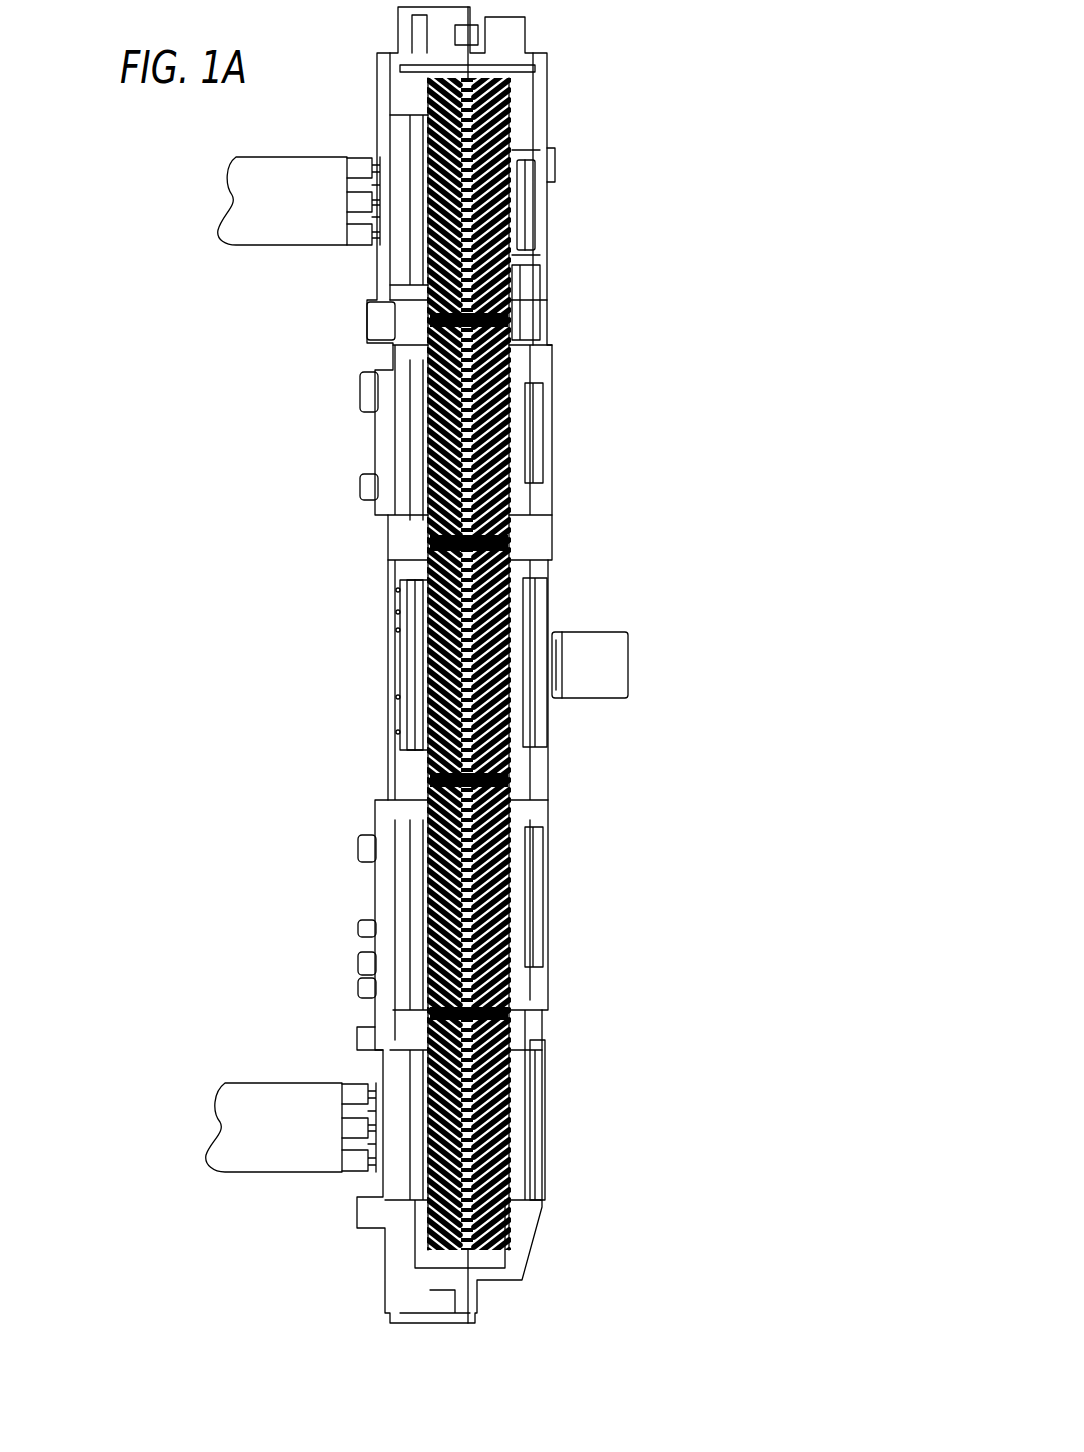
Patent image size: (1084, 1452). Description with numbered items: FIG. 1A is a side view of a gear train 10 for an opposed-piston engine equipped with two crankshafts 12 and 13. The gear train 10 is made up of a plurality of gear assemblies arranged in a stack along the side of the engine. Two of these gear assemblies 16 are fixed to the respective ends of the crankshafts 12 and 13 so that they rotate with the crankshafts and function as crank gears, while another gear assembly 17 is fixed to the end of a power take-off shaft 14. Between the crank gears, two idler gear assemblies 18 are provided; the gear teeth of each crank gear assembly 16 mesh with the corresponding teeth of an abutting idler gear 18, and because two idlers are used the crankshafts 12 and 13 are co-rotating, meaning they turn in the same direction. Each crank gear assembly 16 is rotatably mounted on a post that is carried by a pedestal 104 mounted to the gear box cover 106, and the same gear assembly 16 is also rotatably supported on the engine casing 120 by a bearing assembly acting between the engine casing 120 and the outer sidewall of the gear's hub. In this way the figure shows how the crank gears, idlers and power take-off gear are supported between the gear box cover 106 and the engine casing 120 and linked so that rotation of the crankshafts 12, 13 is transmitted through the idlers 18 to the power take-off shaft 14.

The gear train 10 is at (672, 368).
The crankshaft 12 is at (268, 223).
The crankshaft 13 is at (300, 1173).
The power take-off shaft 14 is at (580, 698).
The gear assembly 16 is at (437, 277).
The gear assembly 17 is at (400, 590).
The idler gear assembly 18 is at (500, 514).
The pedestal 104 is at (527, 205).
The gear box cover 106 is at (540, 313).
The engine casing 120 is at (415, 760).